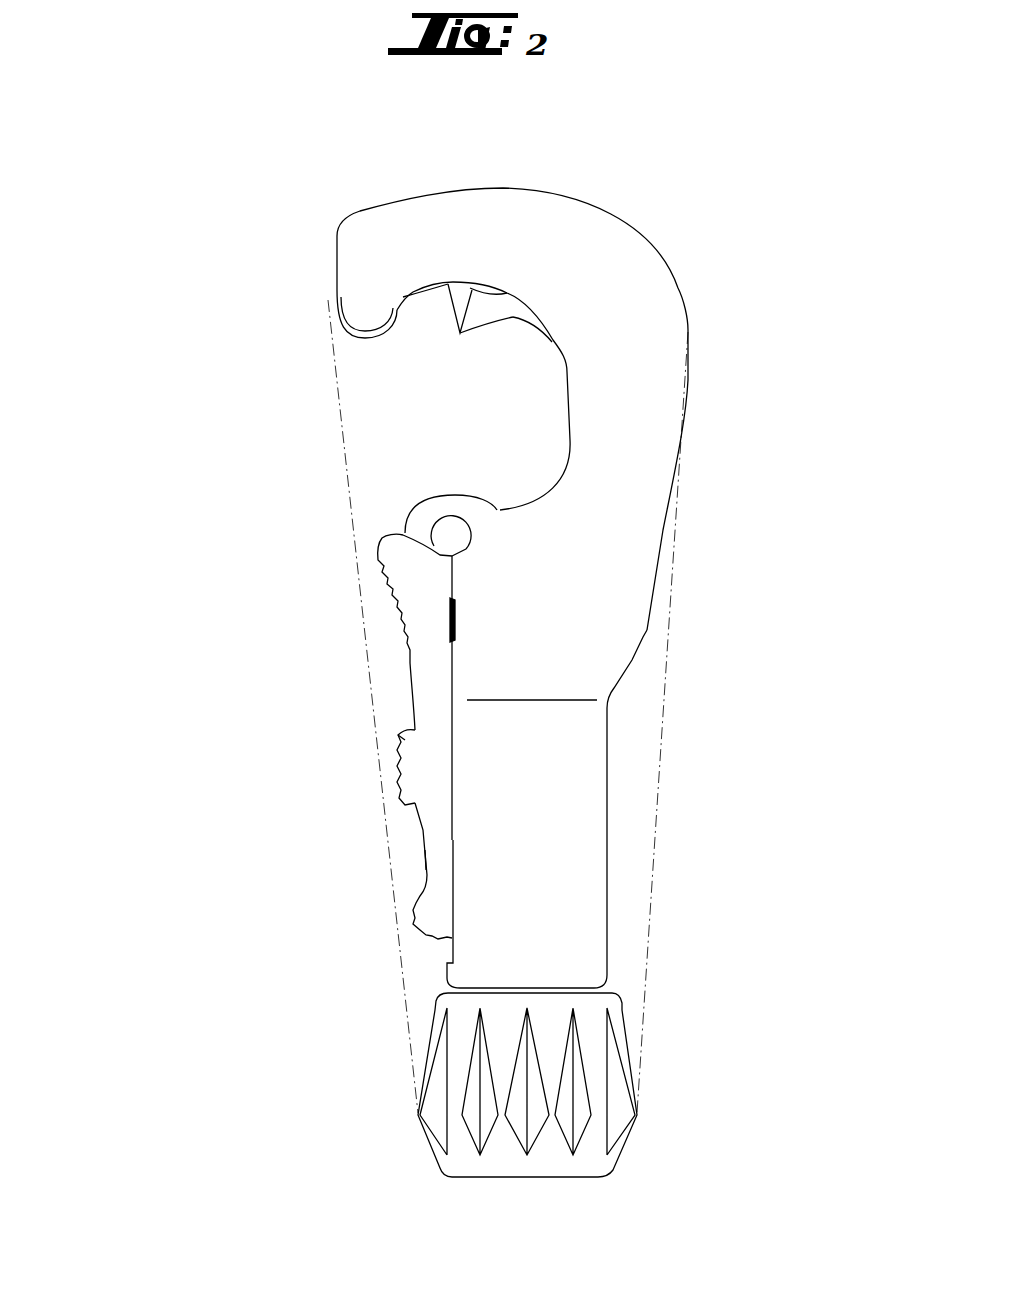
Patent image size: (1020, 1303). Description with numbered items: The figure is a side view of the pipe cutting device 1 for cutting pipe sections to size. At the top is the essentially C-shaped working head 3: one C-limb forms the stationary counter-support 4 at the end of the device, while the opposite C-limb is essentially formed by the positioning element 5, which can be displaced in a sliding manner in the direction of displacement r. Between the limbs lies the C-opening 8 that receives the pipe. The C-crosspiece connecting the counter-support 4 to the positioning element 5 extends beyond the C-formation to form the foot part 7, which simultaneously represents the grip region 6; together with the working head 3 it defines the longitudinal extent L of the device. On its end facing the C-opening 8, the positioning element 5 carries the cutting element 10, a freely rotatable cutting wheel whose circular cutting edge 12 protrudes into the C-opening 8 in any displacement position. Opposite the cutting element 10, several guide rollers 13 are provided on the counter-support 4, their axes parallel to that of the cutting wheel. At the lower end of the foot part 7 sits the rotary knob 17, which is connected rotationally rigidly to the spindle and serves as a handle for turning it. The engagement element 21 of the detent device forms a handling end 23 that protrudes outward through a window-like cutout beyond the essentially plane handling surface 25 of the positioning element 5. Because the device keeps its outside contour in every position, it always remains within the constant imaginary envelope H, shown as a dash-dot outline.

The pipe cutting device 1 is at (672, 215).
The working head 3 is at (660, 331).
The counter-support 4 is at (447, 230).
The positioning element 5 is at (437, 633).
The grip region 6 is at (530, 758).
The foot part 7 is at (567, 872).
The C-opening 8 is at (402, 407).
The cutting element 10 is at (427, 515).
The cutting edge 12 is at (430, 500).
The guide rollers 13 is at (332, 313).
The rotary knob 17 is at (550, 1138).
The engagement element 21 is at (410, 777).
The handling end 23 is at (408, 747).
The handling surface 25 is at (425, 853).
The envelope H is at (668, 627).
The longitudinal extent L is at (125, 552).
The direction of displacement r is at (187, 757).